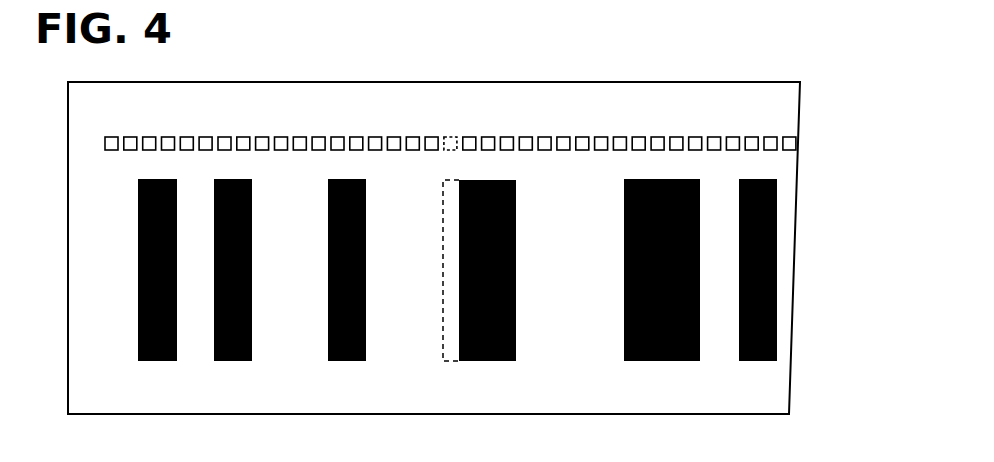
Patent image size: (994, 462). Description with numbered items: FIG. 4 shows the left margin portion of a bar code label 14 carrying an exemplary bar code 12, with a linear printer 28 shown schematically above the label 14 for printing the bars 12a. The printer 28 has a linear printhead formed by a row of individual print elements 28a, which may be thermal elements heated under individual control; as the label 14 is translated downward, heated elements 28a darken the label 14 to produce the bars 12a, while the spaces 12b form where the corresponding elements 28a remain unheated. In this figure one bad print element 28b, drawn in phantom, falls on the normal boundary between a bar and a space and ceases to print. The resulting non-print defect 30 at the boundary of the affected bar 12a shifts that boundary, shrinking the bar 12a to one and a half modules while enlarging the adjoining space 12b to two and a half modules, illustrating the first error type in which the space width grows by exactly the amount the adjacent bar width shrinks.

The bar code label 14 is at (800, 102).
The linear printer 28 is at (712, 130).
The print elements 28a is at (168, 137).
The bad print element 28b is at (449, 136).
The bar code 12 is at (778, 342).
The bar 12a is at (488, 180).
The space 12b is at (402, 195).
The non-print defect 30 is at (442, 245).